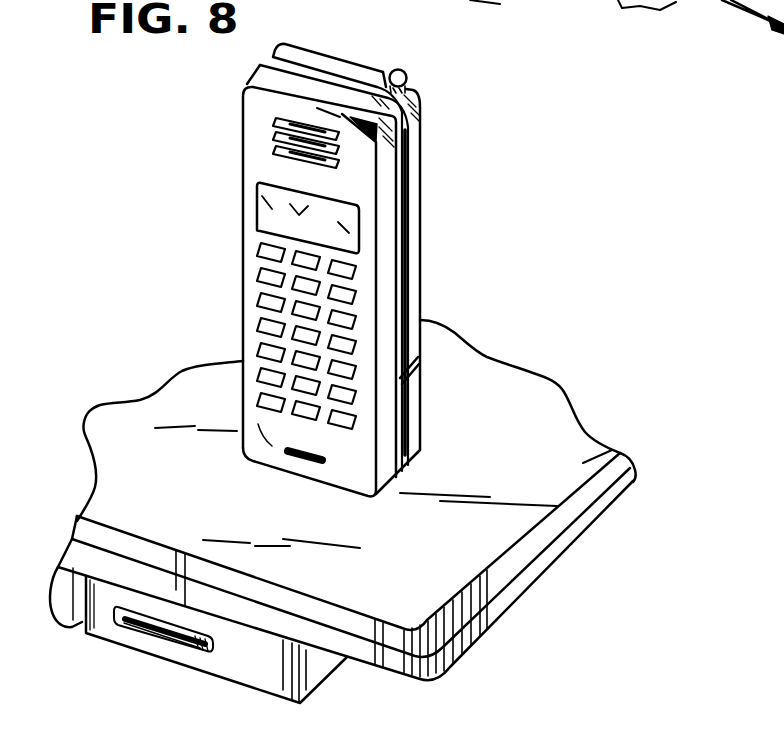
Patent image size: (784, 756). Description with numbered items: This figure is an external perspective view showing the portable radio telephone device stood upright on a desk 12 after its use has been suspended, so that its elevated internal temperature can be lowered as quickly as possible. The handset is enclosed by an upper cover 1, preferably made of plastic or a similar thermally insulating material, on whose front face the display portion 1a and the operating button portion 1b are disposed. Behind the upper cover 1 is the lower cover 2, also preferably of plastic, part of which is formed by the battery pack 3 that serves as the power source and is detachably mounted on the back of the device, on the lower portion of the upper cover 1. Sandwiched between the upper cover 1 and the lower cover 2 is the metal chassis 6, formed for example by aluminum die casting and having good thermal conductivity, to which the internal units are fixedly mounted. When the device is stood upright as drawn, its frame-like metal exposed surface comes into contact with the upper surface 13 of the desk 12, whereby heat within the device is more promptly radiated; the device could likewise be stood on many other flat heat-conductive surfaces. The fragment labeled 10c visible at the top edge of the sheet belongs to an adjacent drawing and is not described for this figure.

The portable telephone handset front housing 1 is at (243, 129).
The display 1a is at (258, 188).
The keypad 1b is at (262, 268).
The rear housing (battery pack) 2 is at (414, 194).
The latch 3 is at (406, 388).
The groove 6 is at (413, 285).
The charging stand 12 is at (575, 538).
The cover sheet 13 is at (609, 450).
The cord 10c is at (620, 0).